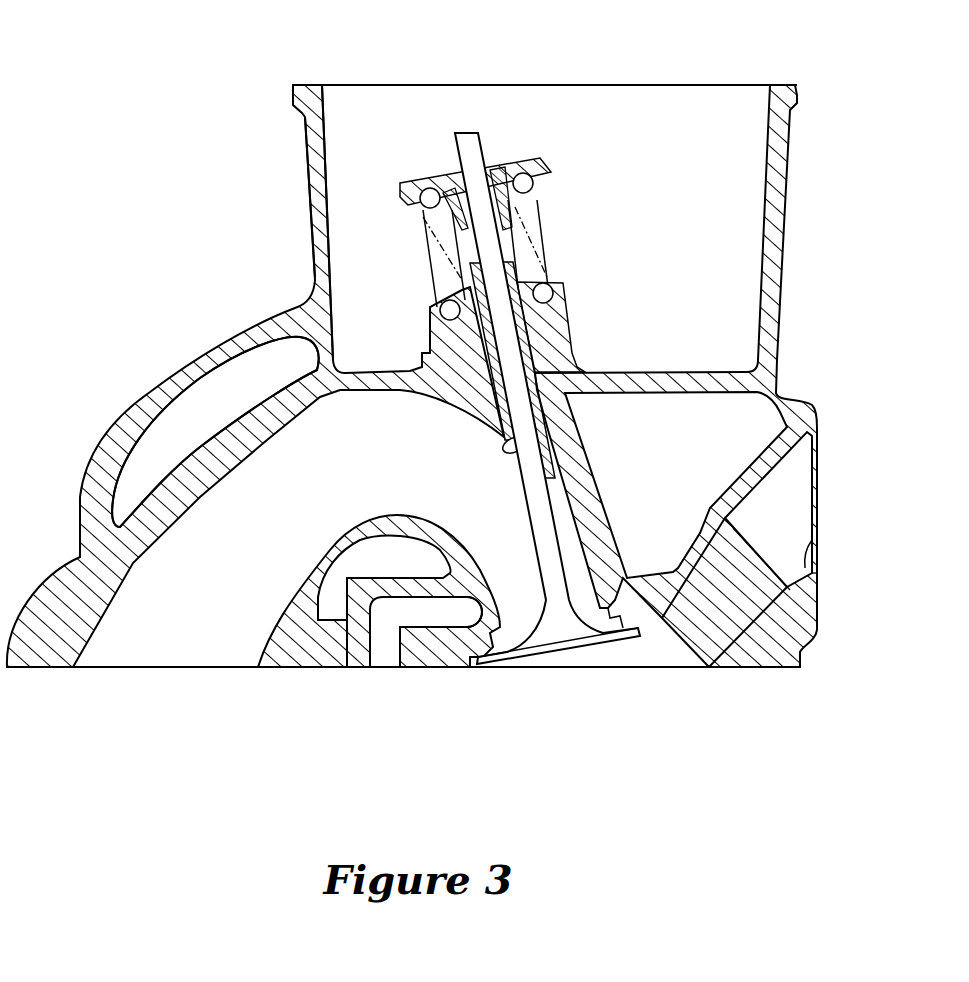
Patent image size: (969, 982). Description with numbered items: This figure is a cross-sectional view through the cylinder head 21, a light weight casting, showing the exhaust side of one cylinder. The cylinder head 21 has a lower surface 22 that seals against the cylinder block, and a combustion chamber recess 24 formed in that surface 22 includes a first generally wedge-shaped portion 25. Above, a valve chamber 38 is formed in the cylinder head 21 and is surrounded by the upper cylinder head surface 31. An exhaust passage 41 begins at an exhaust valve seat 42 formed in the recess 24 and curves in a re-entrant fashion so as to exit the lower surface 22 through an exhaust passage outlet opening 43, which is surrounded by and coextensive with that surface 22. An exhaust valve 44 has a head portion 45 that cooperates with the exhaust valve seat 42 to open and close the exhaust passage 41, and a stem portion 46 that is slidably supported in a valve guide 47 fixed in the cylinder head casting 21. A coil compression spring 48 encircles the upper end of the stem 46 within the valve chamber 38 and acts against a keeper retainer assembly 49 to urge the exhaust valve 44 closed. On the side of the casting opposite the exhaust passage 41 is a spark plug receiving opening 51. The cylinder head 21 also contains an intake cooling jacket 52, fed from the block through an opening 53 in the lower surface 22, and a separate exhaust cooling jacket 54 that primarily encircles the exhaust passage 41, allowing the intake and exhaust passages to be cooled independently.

The cylinder head 21 is at (810, 92).
The lower surface 22 is at (778, 665).
The combustion chamber recess 24 is at (636, 650).
The first generally wedge-shaped portion 25 is at (682, 650).
The upper cylinder head surface 31 is at (305, 85).
The valve chamber 38 is at (665, 140).
The exhaust passage 41 is at (276, 612).
The exhaust valve seat 42 is at (505, 647).
The exhaust passage outlet opening 43 is at (80, 655).
The exhaust valve 44 is at (547, 428).
The head portion 45 is at (566, 645).
The stem portion 46 is at (533, 540).
The valve guide 47 is at (508, 448).
The coil compression spring 48 is at (540, 237).
The keeper retainer assembly 49 is at (548, 170).
The spark plug receiving opening 51 is at (807, 547).
The intake cooling jacket 52 is at (425, 617).
The opening 53 is at (375, 645).
The exhaust cooling jacket 54 is at (187, 400).